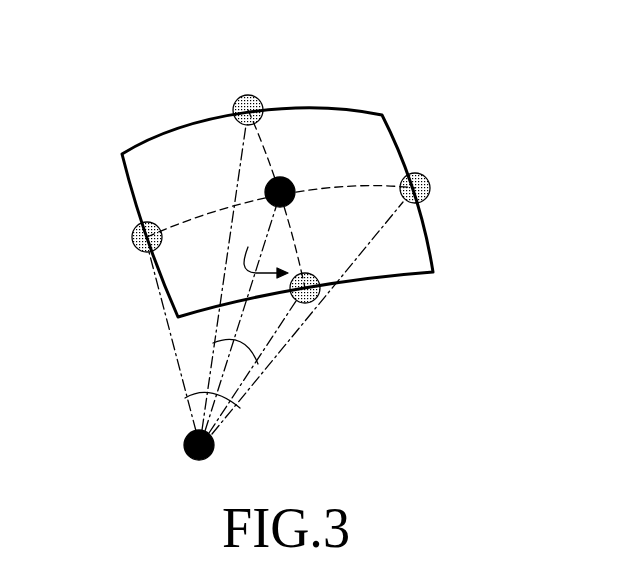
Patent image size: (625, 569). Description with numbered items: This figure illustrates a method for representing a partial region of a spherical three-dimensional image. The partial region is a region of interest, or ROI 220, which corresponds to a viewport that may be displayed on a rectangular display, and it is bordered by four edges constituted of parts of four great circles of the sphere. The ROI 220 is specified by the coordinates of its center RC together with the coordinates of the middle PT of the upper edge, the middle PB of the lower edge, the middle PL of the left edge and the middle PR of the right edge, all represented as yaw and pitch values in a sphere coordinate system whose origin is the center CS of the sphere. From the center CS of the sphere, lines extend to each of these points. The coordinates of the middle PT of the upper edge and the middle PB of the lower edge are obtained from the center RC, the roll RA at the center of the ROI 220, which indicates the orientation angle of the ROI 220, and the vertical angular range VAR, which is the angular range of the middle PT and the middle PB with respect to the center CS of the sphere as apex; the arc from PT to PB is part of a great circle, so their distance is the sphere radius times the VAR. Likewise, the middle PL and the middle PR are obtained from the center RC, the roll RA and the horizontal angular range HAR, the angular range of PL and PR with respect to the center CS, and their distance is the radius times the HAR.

The region of interest (ROI) 220 is at (393, 128).
The middle of the upper edge PT is at (252, 96).
The middle of the lower edge PB is at (320, 292).
The middle of the left edge PL is at (132, 238).
The middle of the right edge PR is at (431, 187).
The center of the ROI RC is at (288, 178).
The center of the sphere CS is at (184, 446).
The roll RA is at (243, 269).
The horizontal angular range HAR is at (210, 432).
The vertical angular range VAR is at (243, 390).